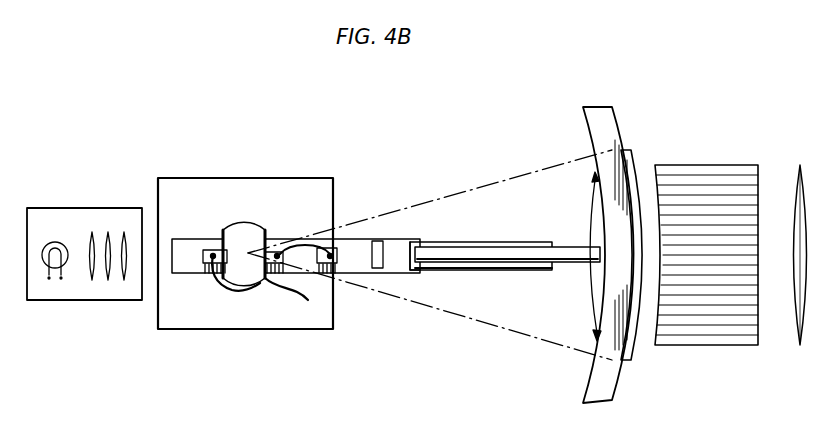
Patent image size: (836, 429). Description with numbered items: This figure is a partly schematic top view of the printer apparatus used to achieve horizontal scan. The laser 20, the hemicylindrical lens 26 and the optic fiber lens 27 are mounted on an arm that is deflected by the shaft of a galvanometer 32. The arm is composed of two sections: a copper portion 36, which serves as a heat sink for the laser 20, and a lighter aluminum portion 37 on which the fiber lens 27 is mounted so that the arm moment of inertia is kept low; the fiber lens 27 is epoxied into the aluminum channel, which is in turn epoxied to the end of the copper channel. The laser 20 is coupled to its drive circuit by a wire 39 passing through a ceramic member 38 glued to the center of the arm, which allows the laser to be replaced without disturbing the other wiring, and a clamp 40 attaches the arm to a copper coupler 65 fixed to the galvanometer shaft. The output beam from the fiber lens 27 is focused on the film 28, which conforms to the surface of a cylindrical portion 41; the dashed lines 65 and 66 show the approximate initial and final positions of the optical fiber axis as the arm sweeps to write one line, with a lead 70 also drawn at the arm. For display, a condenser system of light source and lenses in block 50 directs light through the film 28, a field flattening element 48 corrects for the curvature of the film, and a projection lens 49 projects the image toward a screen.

The condenser system block 50 is at (79, 216).
The galvanometer 32 is at (272, 187).
The clamp 40 is at (246, 230).
The ceramic member 38 is at (211, 252).
The wire 39 is at (305, 251).
The laser 20 is at (339, 253).
The lead wire 70 is at (271, 291).
The copper coupler / initial optical fiber axis position 65 is at (499, 180).
The final optical fiber axis position 66 is at (453, 318).
The hemicylindrical lens 26 is at (378, 272).
The copper portion of arm 36 is at (404, 242).
The aluminum portion of arm 37 is at (505, 246).
The optic fiber lens 27 is at (571, 250).
The cylindrical portion 41 is at (602, 113).
The film 28 is at (638, 164).
The field flattening element 48 is at (705, 178).
The projection lens 49 is at (797, 182).